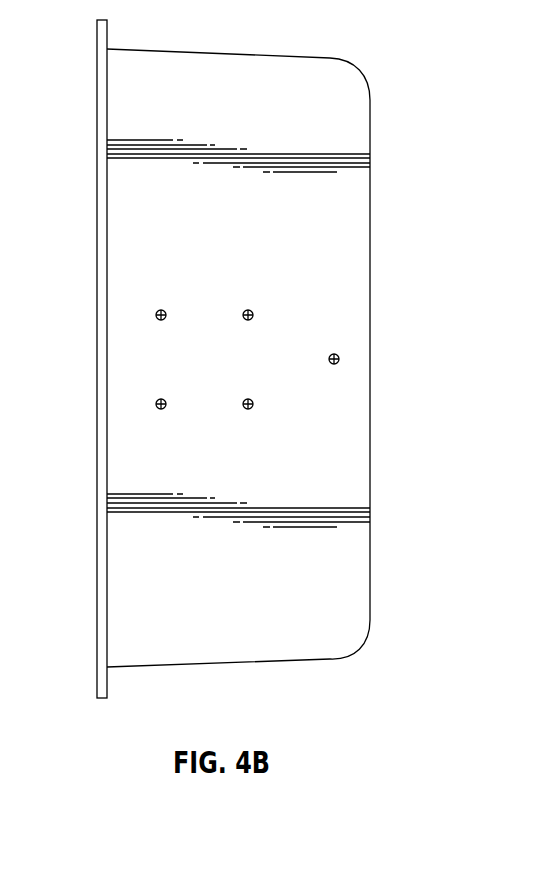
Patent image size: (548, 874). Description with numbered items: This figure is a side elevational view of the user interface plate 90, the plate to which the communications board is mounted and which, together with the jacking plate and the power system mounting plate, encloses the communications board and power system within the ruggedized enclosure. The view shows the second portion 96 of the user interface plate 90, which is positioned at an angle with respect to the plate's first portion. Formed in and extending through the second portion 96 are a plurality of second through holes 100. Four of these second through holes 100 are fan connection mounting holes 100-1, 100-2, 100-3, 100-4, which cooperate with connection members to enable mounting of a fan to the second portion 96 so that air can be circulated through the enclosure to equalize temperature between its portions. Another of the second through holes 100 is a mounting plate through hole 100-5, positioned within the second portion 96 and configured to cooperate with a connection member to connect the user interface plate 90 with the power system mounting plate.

The user interface plate 90 is at (274, 359).
The second portion 96 is at (346, 75).
The second through holes 100 is at (248, 351).
The fan connection mounting hole 100-1 is at (165, 311).
The fan connection mounting hole 100-2 is at (252, 320).
The fan connection mounting hole 100-3 is at (165, 400).
The fan connection mounting hole 100-4 is at (252, 408).
The mounting plate through hole 100-5 is at (338, 364).